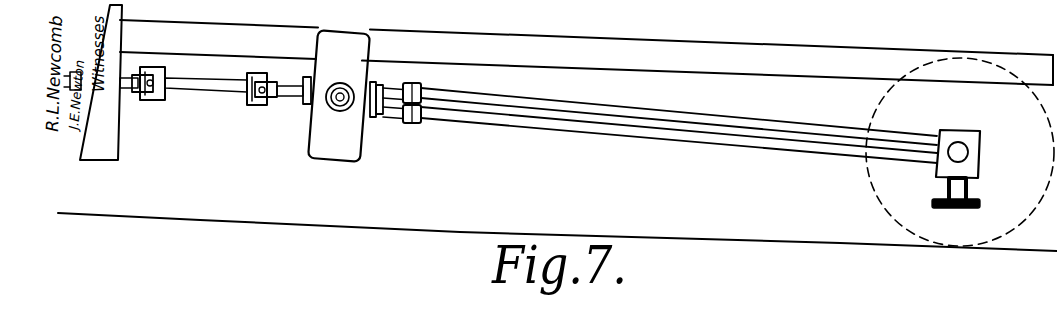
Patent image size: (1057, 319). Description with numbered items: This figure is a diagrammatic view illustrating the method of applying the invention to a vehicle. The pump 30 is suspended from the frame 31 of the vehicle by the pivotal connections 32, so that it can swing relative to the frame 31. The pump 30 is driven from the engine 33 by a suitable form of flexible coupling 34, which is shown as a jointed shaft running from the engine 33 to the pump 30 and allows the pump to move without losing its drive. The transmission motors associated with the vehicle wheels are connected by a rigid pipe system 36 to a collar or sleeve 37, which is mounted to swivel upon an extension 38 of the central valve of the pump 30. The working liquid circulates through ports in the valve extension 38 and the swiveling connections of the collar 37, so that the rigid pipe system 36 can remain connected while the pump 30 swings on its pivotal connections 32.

The pump 30 is at (339, 96).
The frame 31 is at (586, 52).
The pivotal connections 32 is at (340, 109).
The engine 33 is at (71, 103).
The flexible coupling 34 is at (215, 92).
The rigid pipe system 36 is at (727, 142).
The collar or sleeve 37 is at (383, 116).
The extension of the central valve 38 is at (373, 118).